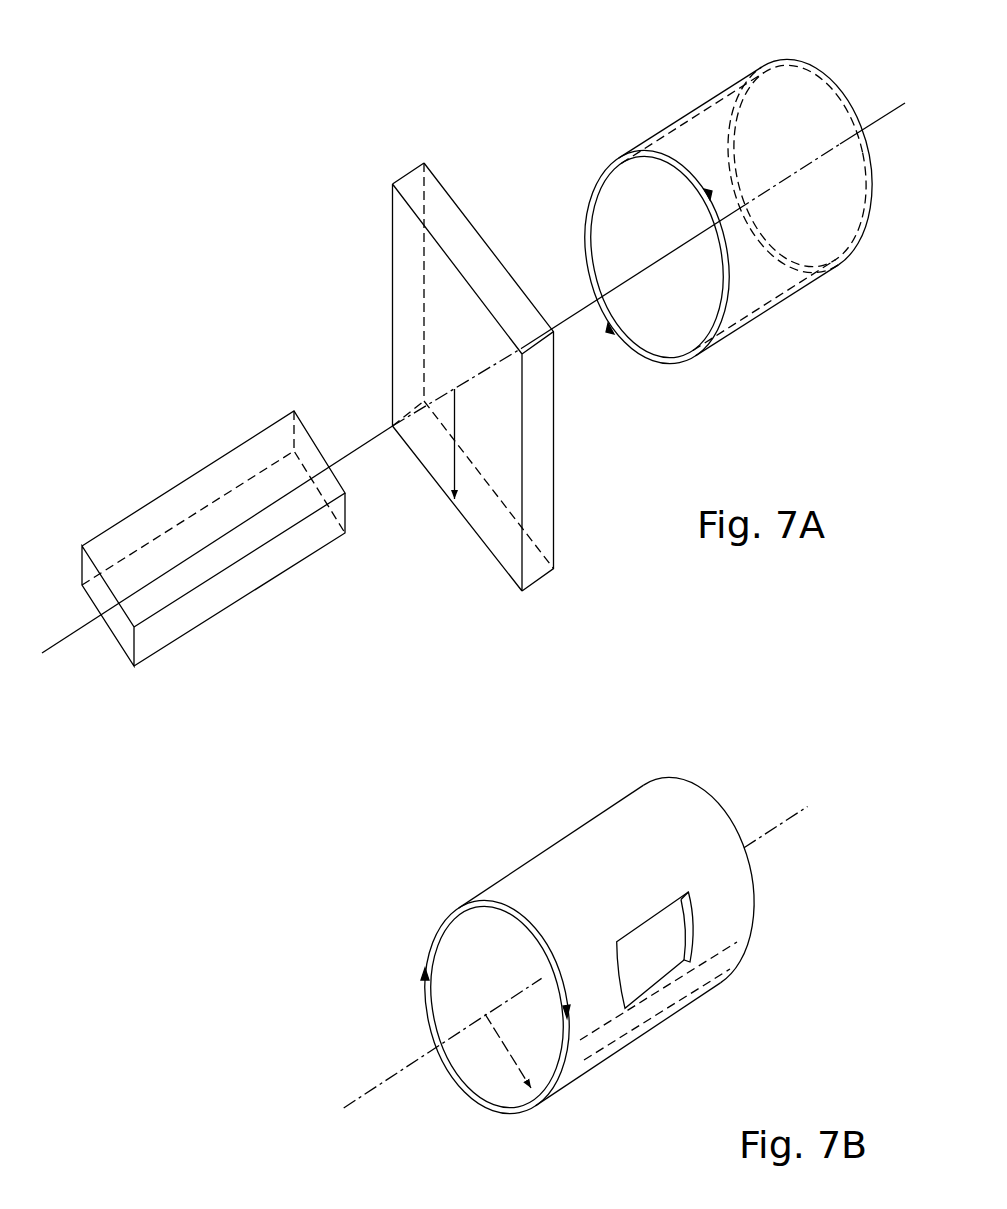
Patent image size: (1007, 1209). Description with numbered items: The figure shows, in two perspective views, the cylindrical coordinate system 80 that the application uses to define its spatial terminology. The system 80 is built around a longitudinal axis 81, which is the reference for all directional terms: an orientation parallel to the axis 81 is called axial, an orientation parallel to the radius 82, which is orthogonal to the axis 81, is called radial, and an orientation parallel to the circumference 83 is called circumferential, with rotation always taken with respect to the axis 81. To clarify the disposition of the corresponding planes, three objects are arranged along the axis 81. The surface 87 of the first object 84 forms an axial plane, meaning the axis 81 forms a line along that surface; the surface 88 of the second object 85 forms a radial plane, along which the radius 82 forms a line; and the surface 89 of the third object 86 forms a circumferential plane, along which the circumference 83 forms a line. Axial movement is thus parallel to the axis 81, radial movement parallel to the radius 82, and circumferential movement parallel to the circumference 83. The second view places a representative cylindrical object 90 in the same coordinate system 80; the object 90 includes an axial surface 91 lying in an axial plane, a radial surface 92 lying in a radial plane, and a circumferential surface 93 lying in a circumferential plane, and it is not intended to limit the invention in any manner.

In FIG. 7A, the cylindrical coordinate system 80 is at (312, 207).
In FIG. 7B, the cylindrical coordinate system 80 is at (734, 773).
In FIG. 7A, the longitudinal axis 81 is at (875, 117).
In FIG. 7B, the longitudinal axis 81 is at (380, 1084).
In FIG. 7A, the radius 82 is at (454, 460).
In FIG. 7B, the radius 82 is at (511, 1047).
In FIG. 7A, the circumference 83 is at (584, 237).
In FIG. 7B, the circumference 83 is at (443, 929).
In FIG. 7A, the object 84 is at (166, 654).
In FIG. 7A, the object 85 is at (563, 570).
In FIG. 7A, the object 86 is at (748, 335).
In FIG. 7A, the surface 87 is at (202, 562).
In FIG. 7A, the surface 88 is at (403, 303).
In FIG. 7A, the surface 89 is at (695, 105).
In FIG. 7B, the cylindrical object 90 is at (615, 790).
In FIG. 7B, the axial surface 91 is at (660, 980).
In FIG. 7B, the radial surface 92 is at (475, 1096).
In FIG. 7B, the circumferential surface 93 is at (583, 850).